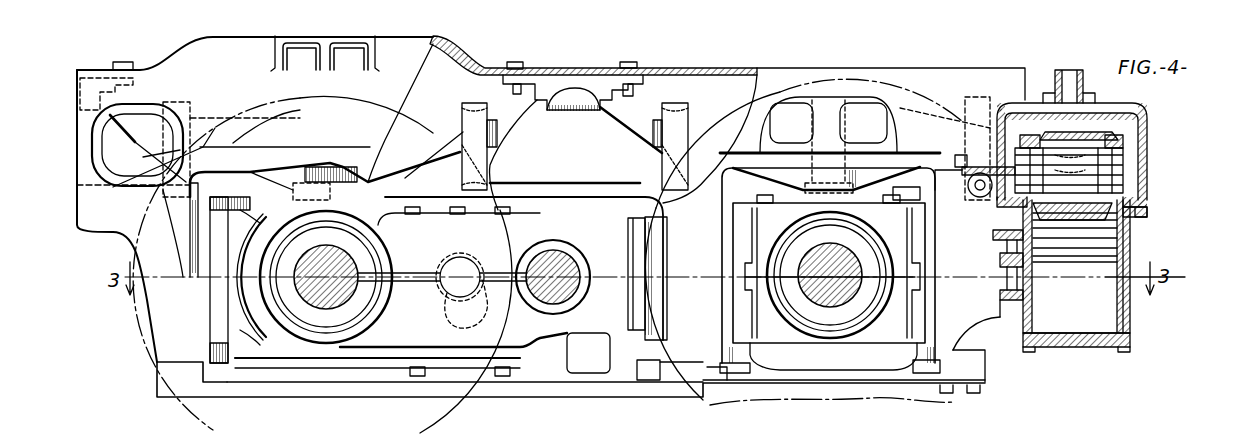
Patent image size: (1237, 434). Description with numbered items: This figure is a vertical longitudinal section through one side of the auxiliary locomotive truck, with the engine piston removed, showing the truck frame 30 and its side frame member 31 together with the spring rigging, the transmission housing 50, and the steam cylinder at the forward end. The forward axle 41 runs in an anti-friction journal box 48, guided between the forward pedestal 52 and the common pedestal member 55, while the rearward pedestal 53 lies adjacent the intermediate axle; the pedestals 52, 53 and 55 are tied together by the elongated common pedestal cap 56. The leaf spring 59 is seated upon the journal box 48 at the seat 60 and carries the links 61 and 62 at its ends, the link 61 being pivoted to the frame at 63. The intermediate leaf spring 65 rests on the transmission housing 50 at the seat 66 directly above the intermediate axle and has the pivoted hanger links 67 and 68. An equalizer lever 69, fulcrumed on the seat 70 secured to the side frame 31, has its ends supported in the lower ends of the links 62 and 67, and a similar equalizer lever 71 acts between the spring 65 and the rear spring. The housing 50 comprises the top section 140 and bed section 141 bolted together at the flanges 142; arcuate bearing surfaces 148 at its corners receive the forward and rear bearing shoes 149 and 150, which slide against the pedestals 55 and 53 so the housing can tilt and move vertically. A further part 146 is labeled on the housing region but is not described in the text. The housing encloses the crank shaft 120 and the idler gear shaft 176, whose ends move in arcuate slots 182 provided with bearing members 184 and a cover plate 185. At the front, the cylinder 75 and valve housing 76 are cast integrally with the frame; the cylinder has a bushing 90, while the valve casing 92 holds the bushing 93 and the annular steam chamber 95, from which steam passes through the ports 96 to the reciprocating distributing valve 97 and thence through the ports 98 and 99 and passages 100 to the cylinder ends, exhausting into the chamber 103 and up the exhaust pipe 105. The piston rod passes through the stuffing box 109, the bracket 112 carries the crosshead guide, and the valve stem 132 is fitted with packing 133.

The truck frame 30 is at (185, 62).
The side frame members 31 is at (770, 75).
The forward axle 41 is at (800, 300).
The journal boxes 48 is at (880, 338).
The transmission housing 50 is at (522, 215).
The forward pedestals 52 is at (975, 365).
The rearward pedestal 53 is at (160, 312).
The common pedestal member 55 is at (690, 350).
The common pedestal cap 56 is at (497, 385).
The leaf springs 59 is at (713, 120).
The spring seat 60 is at (800, 197).
The link 61 is at (968, 95).
The link 62 is at (672, 108).
The pivot connection 63 is at (975, 197).
The leaf springs 65 is at (422, 118).
The spring seat 66 is at (362, 190).
The spring hanger link 67 is at (463, 132).
The spring hanger link 68 is at (172, 137).
The equalizer lever 69 is at (530, 118).
The seat 70 is at (565, 78).
The equalizer lever 71 is at (133, 118).
The steam engine cylinders 75 is at (1102, 350).
The steam chests and distributing valve housings 76 is at (1140, 108).
The cylinder bushings 90 is at (1072, 332).
The valve casing 92 is at (1115, 145).
The valve bushing 93 is at (1125, 155).
The annular steam chamber 95 is at (1075, 145).
The ports 96 is at (1072, 218).
The distributing valve 97 is at (1105, 172).
The port 98 is at (1033, 145).
The port 99 is at (1120, 135).
The passages 100 is at (1125, 215).
The exhaust chamber 103 is at (1013, 112).
The exhaust pipe 105 is at (1068, 72).
The stuffing boxes 109 is at (1000, 290).
The brackets 112 is at (992, 243).
The crank shaft 120 is at (535, 270).
The valve stem 132 is at (945, 180).
The packing arrangements 133 is at (965, 155).
The top section 140 is at (585, 213).
The bottom section 141 is at (572, 338).
The flanged bolted joint 142 is at (348, 288).
The brake beam 146 is at (690, 375).
The arcuate bearing surfaces 148 is at (295, 328).
The forward bearing shoes 149 is at (652, 303).
The rear bearing shoes 150 is at (225, 322).
The idler gear shaft 176 is at (458, 255).
The arcuate slots 182 is at (455, 322).
The bearing members 184 is at (445, 262).
The cover plate 185 is at (445, 290).